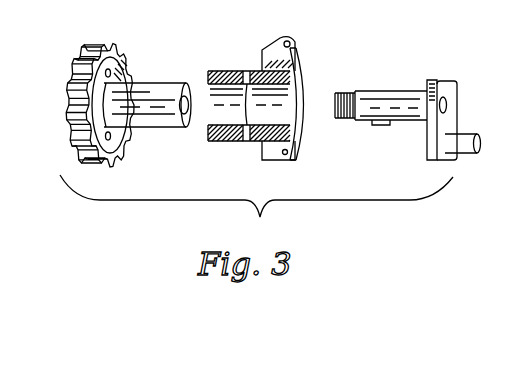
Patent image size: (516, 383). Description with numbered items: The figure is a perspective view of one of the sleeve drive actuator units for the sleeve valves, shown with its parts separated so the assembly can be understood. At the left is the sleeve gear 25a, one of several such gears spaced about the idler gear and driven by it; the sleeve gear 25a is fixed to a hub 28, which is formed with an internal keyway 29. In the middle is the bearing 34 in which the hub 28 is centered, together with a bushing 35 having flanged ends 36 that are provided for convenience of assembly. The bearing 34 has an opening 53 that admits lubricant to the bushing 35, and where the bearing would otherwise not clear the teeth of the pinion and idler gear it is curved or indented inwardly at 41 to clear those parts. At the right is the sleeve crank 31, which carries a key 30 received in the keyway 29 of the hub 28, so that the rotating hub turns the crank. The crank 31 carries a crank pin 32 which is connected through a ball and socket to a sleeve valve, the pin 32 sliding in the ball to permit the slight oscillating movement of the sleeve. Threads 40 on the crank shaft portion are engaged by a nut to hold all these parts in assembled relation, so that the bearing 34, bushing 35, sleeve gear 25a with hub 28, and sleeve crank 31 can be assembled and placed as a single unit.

The sleeve gear 25a is at (95, 46).
The hub 28 is at (157, 86).
The internal keyway 29 is at (188, 119).
The bearing 34 is at (233, 71).
The opening 53 is at (246, 137).
The flanged end 36 is at (297, 70).
The bushing 35 is at (278, 105).
The indentation 41 is at (297, 148).
The threads 40 is at (345, 118).
The key 30 is at (383, 125).
The sleeve crank 31 is at (437, 82).
The crank pin 32 is at (466, 135).